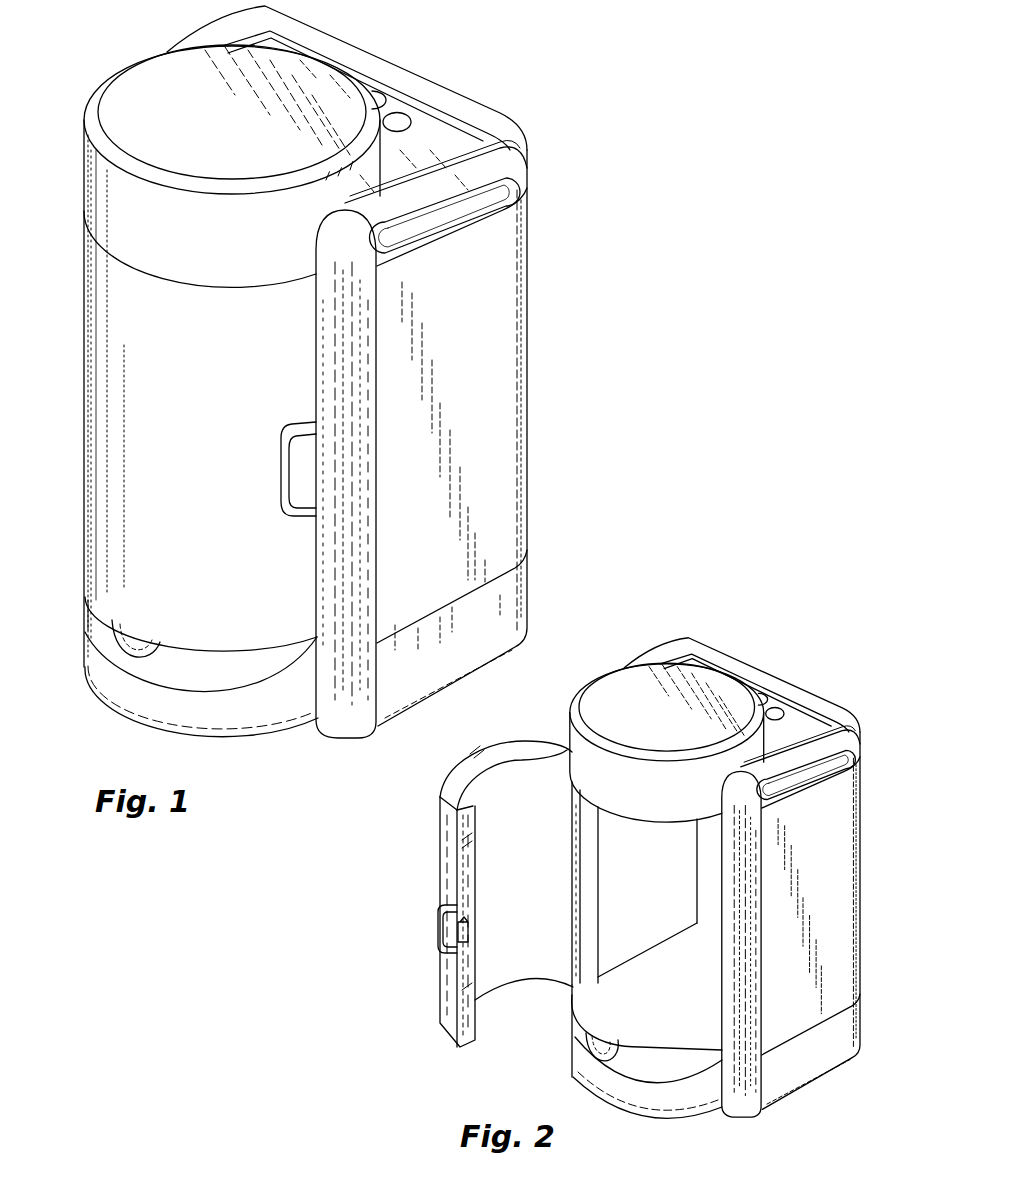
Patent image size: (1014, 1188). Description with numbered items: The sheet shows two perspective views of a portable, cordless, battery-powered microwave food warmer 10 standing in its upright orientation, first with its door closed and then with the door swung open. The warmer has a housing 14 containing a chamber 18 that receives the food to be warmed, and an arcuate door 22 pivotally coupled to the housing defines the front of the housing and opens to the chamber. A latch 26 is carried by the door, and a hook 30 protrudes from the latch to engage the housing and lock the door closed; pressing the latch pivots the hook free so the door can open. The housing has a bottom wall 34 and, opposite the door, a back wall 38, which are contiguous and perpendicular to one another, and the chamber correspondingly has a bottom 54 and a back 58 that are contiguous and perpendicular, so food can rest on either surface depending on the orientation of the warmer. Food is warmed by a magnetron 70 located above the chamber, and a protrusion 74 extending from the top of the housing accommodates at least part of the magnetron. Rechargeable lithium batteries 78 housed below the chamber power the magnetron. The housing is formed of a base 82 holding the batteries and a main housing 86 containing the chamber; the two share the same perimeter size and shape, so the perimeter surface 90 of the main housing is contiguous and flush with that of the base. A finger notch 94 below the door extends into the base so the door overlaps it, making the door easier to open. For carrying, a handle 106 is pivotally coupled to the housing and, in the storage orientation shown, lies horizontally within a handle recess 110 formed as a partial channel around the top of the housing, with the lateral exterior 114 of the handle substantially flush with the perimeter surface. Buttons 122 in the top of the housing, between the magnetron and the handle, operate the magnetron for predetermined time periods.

In FIG. 1, the microwave food warmer 10 is at (512, 93).
In FIG. 2, the microwave food warmer 10 is at (749, 630).
In FIG. 1, the housing 14 is at (512, 300).
In FIG. 2, the chamber 18 is at (650, 882).
In FIG. 1, the door 22 is at (130, 334).
In FIG. 2, the door 22 is at (447, 820).
In FIG. 1, the latch 26 is at (278, 471).
In FIG. 2, the latch 26 is at (440, 923).
In FIG. 2, the hook 30 is at (470, 930).
In FIG. 1, the bottom wall 34 is at (218, 741).
In FIG. 1, the back wall 38 is at (528, 422).
In FIG. 2, the bottom of the chamber 54 is at (690, 1005).
In FIG. 2, the back of the chamber 58 is at (707, 860).
In FIG. 1, the magnetron 70 is at (130, 106).
In FIG. 1, the protrusion 74 is at (168, 78).
In FIG. 1, the rechargeable lithium batteries 78 is at (397, 676).
In FIG. 1, the base 82 is at (530, 600).
In FIG. 1, the main housing 86 is at (504, 352).
In FIG. 1, the perimeter surface 90 is at (508, 513).
In FIG. 1, the finger notch 94 is at (142, 646).
In FIG. 2, the finger notch 94 is at (602, 1053).
In FIG. 1, the handle 106 is at (447, 96).
In FIG. 1, the handle recess 110 is at (500, 212).
In FIG. 1, the lateral exterior 114 is at (513, 172).
In FIG. 1, the buttons 122 is at (397, 115).